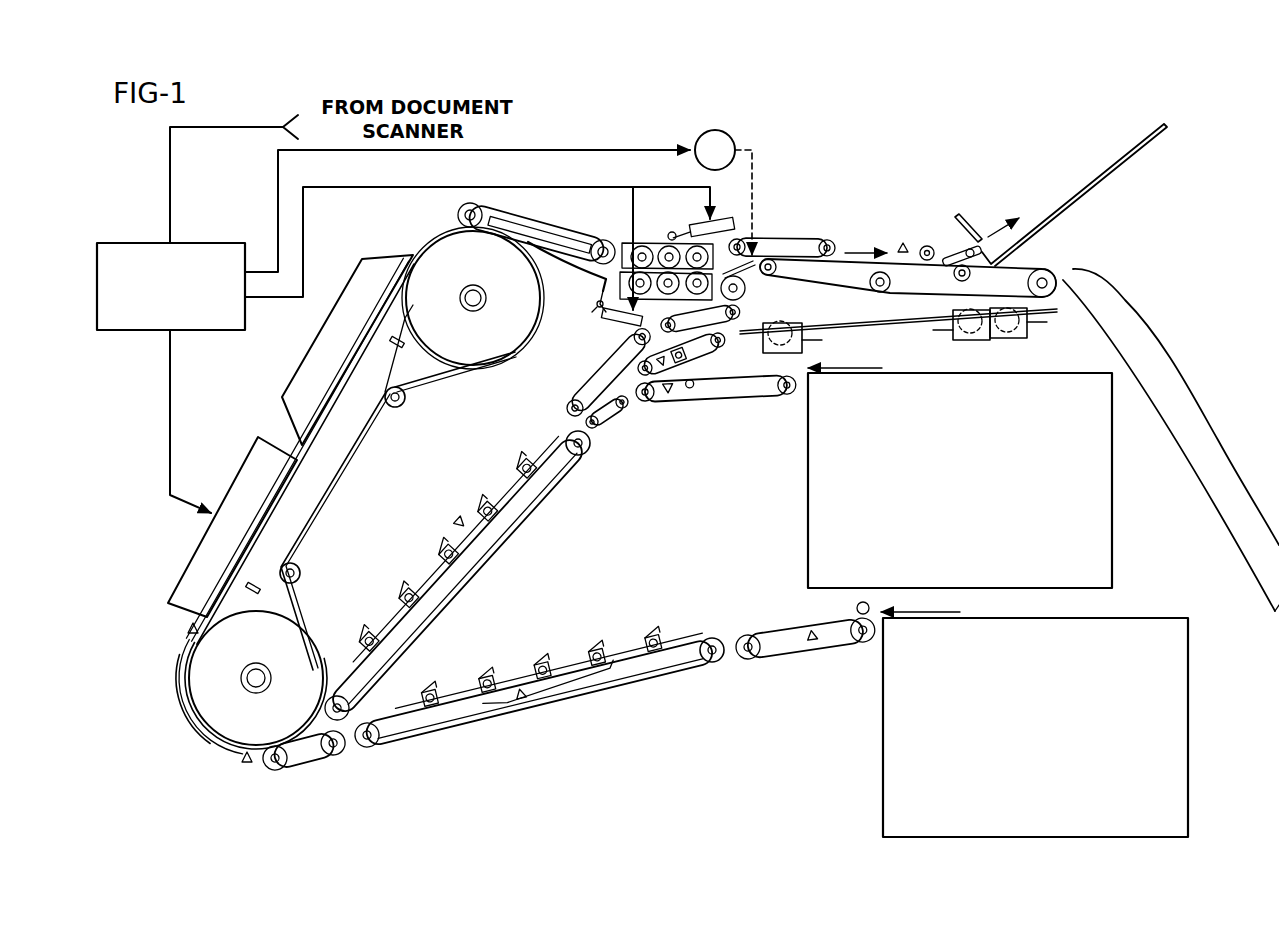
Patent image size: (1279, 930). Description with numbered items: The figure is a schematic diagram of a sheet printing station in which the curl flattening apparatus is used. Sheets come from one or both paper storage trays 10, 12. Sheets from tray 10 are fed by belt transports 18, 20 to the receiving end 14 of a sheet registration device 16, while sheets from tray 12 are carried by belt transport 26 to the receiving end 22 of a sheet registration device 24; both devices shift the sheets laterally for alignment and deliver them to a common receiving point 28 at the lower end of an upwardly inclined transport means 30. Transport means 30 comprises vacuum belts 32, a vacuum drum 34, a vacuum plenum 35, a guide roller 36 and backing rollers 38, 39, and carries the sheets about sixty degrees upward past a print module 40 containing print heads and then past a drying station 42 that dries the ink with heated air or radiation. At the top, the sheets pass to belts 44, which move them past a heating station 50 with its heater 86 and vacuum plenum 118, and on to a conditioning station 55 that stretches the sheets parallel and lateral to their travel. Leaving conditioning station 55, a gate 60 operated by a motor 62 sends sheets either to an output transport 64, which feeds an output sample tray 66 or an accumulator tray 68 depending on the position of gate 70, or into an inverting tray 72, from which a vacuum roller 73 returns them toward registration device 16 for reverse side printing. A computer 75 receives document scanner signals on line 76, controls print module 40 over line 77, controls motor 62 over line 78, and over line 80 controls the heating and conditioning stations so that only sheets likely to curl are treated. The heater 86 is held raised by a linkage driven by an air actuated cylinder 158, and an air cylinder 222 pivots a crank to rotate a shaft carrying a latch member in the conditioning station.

The paper storage tray 10 is at (941, 493).
The paper storage tray 12 is at (1005, 741).
The receiving end 14 is at (567, 432).
The sheet registration device 16 is at (497, 571).
The belt transport 18 is at (722, 398).
The belt transport 20 is at (612, 421).
The receiving end 22 is at (711, 632).
The sheet registration device 24 is at (568, 713).
The belt transport 26 is at (774, 661).
The common receiving point 28 is at (306, 731).
The upwardly inclined transport means 30 is at (178, 629).
The vacuum belts 32 is at (308, 521).
The vacuum drum 34 is at (308, 637).
The vacuum plenum 35 is at (322, 463).
The guide roller 36 is at (512, 333).
The backing roller 38 is at (398, 407).
The backing roller 39 is at (301, 573).
The print module 40 is at (192, 562).
The drying station 42 is at (300, 379).
The belts 44 is at (458, 214).
The heating station 50 is at (510, 207).
The conditioning station 55 is at (650, 216).
The gate 60 is at (744, 272).
The motor 62 is at (703, 134).
The output transport 64 is at (950, 205).
The output sample tray 66 is at (1094, 181).
The accumulator tray 68 is at (1185, 470).
The gate 70 is at (957, 250).
The inverting tray 72 is at (861, 312).
The vacuum roller 73 is at (808, 349).
The computer 75 is at (162, 254).
The line 76 is at (170, 164).
The line 77 is at (170, 409).
The line 78 is at (278, 182).
The line 80 is at (337, 188).
The heater 86 is at (565, 263).
The vacuum plenum 118 is at (548, 203).
The air actuated cylinder 158 is at (607, 322).
The air cylinder 222 is at (723, 222).